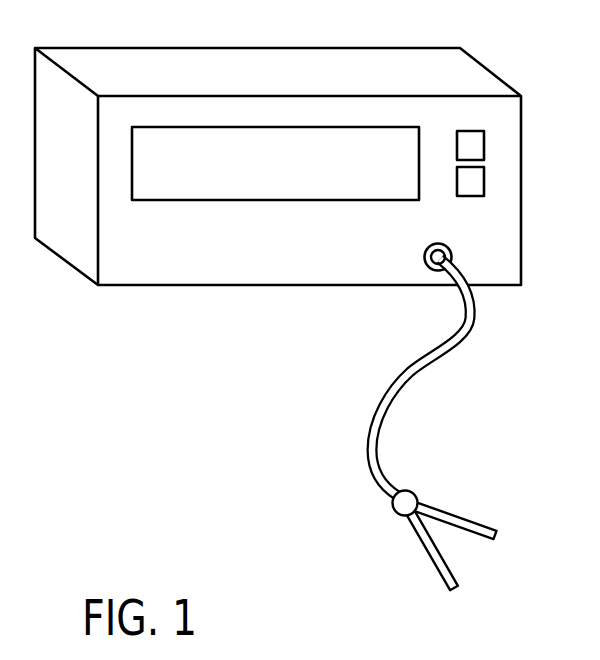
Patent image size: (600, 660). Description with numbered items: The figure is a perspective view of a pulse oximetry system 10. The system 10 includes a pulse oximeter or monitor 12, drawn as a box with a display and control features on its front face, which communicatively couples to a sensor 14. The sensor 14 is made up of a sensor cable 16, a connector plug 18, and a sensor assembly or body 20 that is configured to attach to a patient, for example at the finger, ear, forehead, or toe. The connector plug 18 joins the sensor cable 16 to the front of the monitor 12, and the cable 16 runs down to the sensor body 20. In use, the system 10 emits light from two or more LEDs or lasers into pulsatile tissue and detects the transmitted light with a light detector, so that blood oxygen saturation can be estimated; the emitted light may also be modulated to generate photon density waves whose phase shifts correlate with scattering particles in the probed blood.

The pulse oximetry system 10 is at (517, 60).
The monitor 12 is at (268, 60).
The sensor 14 is at (468, 468).
The sensor cable 16 is at (407, 370).
The connector plug 18 is at (447, 248).
The sensor body 20 is at (422, 540).